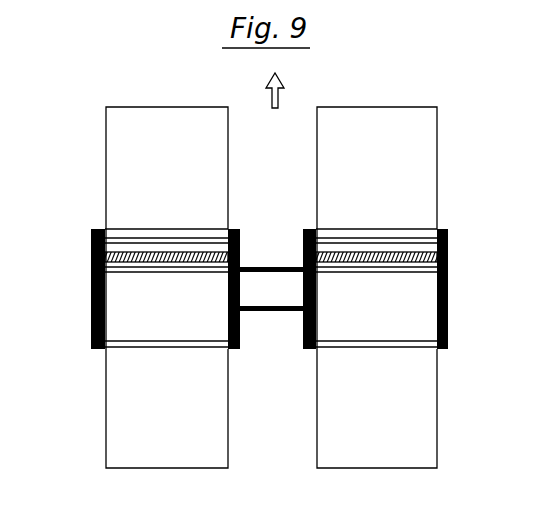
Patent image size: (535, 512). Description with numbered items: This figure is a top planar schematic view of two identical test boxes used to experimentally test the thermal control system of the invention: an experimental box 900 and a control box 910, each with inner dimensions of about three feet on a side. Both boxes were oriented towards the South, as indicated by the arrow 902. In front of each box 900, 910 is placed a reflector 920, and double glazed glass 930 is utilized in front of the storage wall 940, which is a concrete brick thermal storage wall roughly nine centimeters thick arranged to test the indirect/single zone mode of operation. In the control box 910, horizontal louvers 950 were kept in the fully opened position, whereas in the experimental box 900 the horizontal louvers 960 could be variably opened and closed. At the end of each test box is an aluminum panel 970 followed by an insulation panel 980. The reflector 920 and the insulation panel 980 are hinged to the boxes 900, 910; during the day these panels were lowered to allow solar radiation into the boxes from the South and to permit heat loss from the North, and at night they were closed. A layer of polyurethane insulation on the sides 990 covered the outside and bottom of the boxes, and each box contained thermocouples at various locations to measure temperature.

The experimental test box 900 is at (84, 222).
The arrow 902 is at (278, 100).
The control test box 910 is at (445, 231).
The reflector 920 is at (340, 155).
The double glazed glass 930 is at (341, 230).
The storage wall 940 is at (133, 250).
The horizontal louvers 950 is at (378, 274).
The horizontal louvers 960 is at (160, 273).
The aluminum panel 970 is at (340, 348).
The insulation panel 980 is at (343, 422).
The sides 990 is at (450, 322).